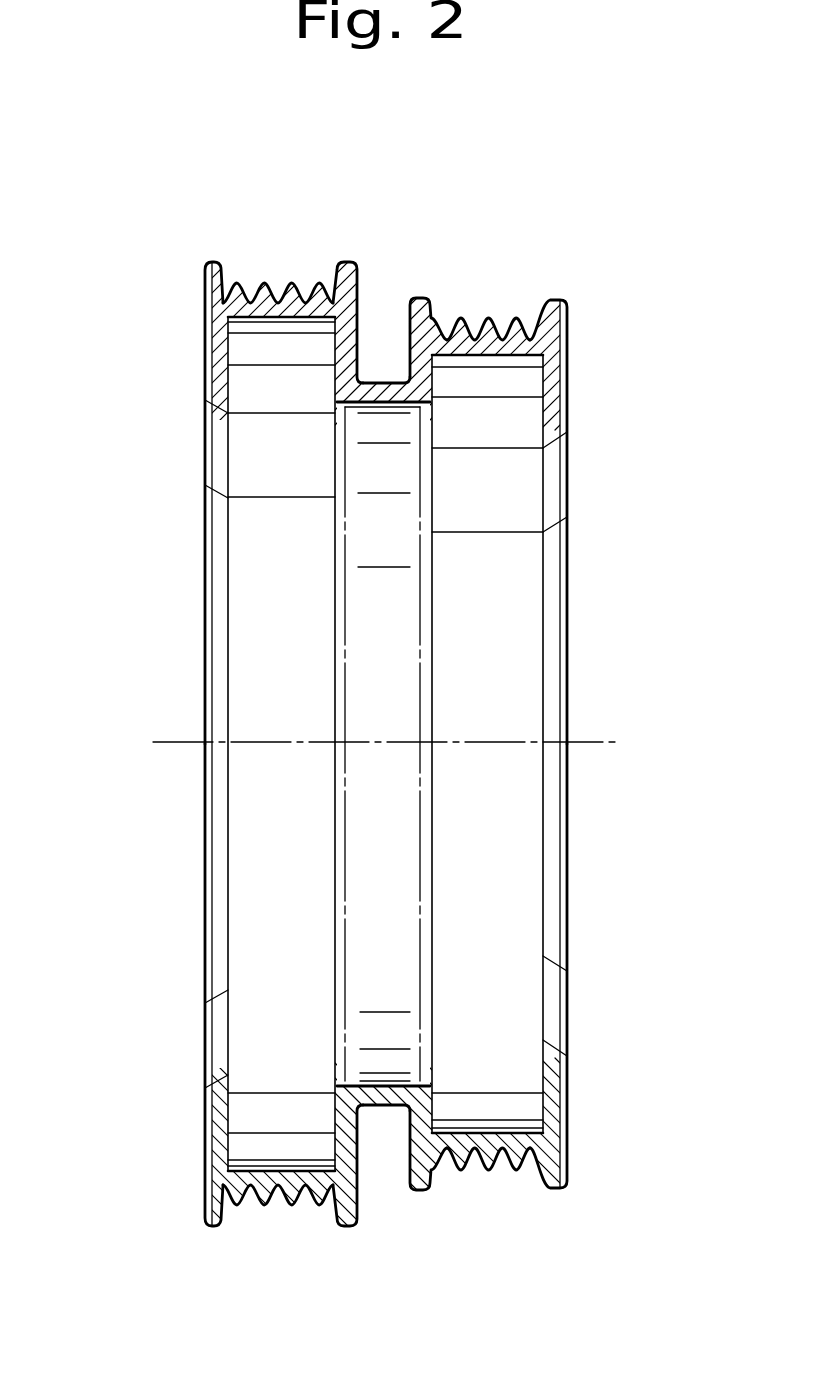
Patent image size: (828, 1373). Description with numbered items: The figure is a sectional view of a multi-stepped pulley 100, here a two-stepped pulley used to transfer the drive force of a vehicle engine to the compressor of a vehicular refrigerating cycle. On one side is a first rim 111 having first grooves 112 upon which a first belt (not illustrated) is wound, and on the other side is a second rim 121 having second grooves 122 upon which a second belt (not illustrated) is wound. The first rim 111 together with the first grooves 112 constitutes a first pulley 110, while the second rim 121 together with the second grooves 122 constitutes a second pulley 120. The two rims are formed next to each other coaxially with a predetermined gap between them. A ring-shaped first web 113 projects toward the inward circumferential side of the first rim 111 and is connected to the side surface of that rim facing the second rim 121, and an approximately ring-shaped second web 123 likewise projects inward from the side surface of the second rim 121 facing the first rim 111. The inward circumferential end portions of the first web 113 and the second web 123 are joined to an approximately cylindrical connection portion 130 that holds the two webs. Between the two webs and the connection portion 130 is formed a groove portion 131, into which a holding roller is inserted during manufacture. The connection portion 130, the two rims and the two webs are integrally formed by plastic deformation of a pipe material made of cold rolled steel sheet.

The multi-stepped pulley 100 is at (535, 192).
The first pulley 110 is at (205, 368).
The first rim 111 is at (207, 283).
The first grooves 112 is at (320, 284).
The first web 113 is at (359, 292).
The second pulley 120 is at (567, 413).
The second rim 121 is at (565, 303).
The second grooves 122 is at (530, 320).
The second web 123 is at (403, 327).
The connection portion 130 is at (387, 380).
The groove portion 131 is at (387, 1153).